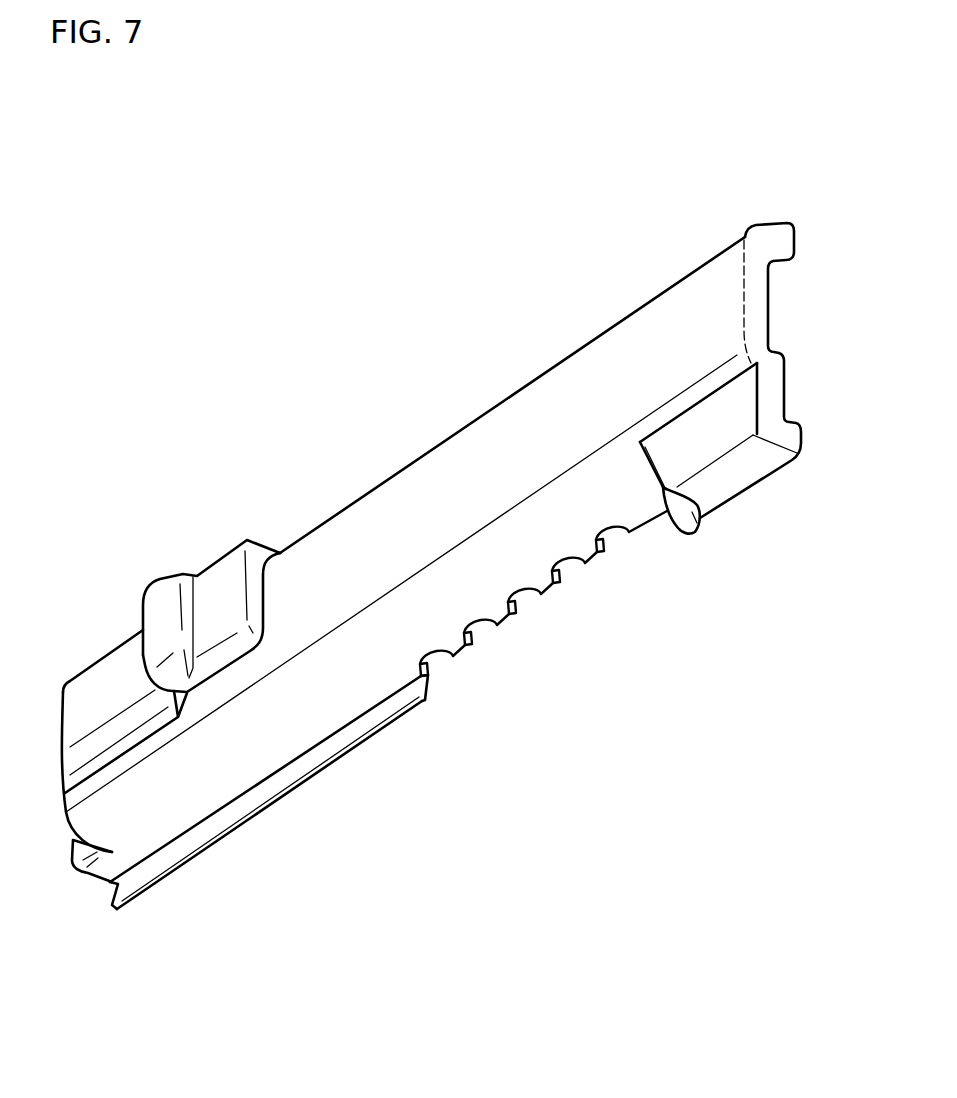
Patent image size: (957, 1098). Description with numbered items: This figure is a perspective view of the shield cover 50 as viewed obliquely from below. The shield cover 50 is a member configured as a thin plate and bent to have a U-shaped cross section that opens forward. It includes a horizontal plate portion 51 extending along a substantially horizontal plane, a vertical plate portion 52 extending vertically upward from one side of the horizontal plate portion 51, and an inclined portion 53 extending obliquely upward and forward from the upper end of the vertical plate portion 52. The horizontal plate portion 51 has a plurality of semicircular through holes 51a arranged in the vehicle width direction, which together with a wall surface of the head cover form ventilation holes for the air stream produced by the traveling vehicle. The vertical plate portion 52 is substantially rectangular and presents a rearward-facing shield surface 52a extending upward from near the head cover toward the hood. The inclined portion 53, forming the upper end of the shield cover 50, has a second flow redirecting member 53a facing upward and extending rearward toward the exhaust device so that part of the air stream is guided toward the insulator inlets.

The shield cover 50 is at (148, 363).
The horizontal plate portion 51 is at (302, 712).
The through holes 51a is at (427, 673).
The vertical plate portion 52 is at (350, 552).
The shield surface 52a is at (483, 472).
The inclined portion 53 is at (718, 448).
The second flow redirecting member 53a is at (767, 225).